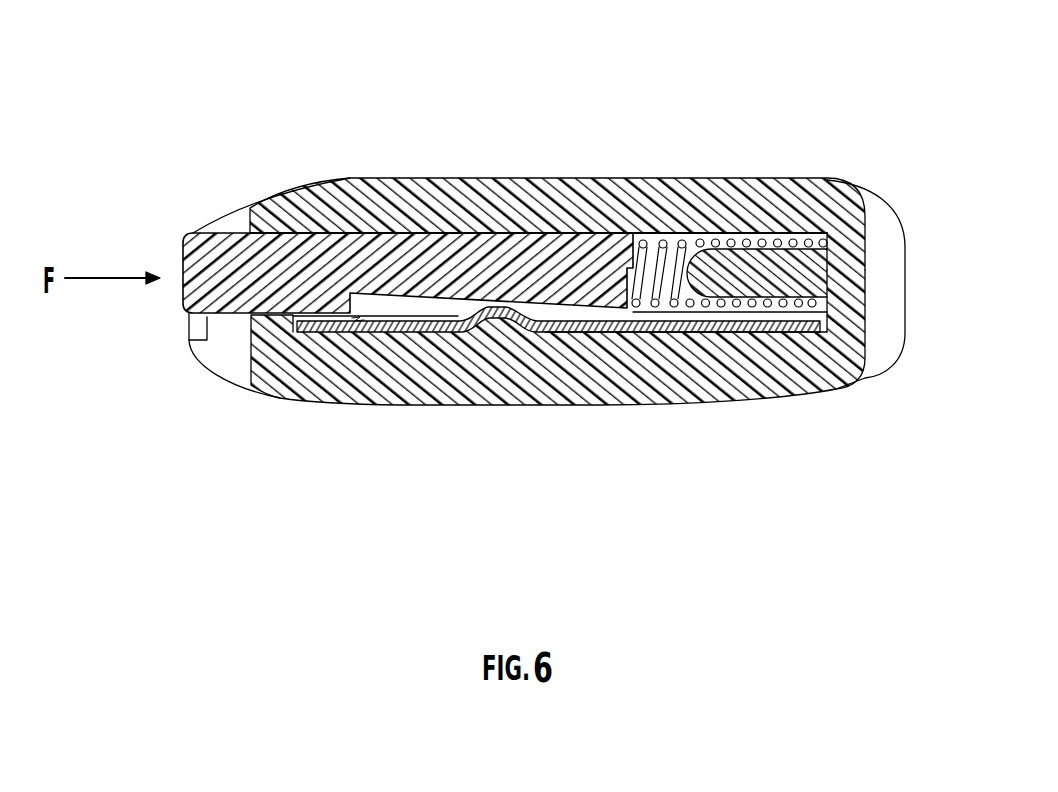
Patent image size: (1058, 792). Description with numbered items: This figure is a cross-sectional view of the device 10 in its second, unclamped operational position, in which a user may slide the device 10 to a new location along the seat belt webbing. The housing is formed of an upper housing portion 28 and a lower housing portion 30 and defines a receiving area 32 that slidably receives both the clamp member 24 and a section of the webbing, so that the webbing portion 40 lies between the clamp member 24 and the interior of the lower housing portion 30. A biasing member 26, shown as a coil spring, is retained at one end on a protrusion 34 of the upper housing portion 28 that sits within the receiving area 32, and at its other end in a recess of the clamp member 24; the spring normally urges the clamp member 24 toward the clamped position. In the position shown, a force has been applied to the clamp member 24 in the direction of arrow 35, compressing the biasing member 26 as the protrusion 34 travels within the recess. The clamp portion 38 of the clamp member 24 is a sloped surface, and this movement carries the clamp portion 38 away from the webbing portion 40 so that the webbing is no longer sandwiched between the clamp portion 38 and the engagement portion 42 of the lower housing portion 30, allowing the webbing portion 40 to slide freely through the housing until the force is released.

The device 10 is at (668, 95).
The clamp member 24 is at (182, 245).
The biasing member 26 is at (630, 302).
The upper housing portion 28 is at (342, 180).
The lower housing portion 30 is at (807, 397).
The receiving area 32 is at (357, 333).
The protrusion 34 is at (780, 283).
The arrow 35 is at (95, 279).
The clamp portion 38 is at (443, 300).
The webbing portion 40 is at (570, 331).
The engagement portion 42 is at (497, 320).